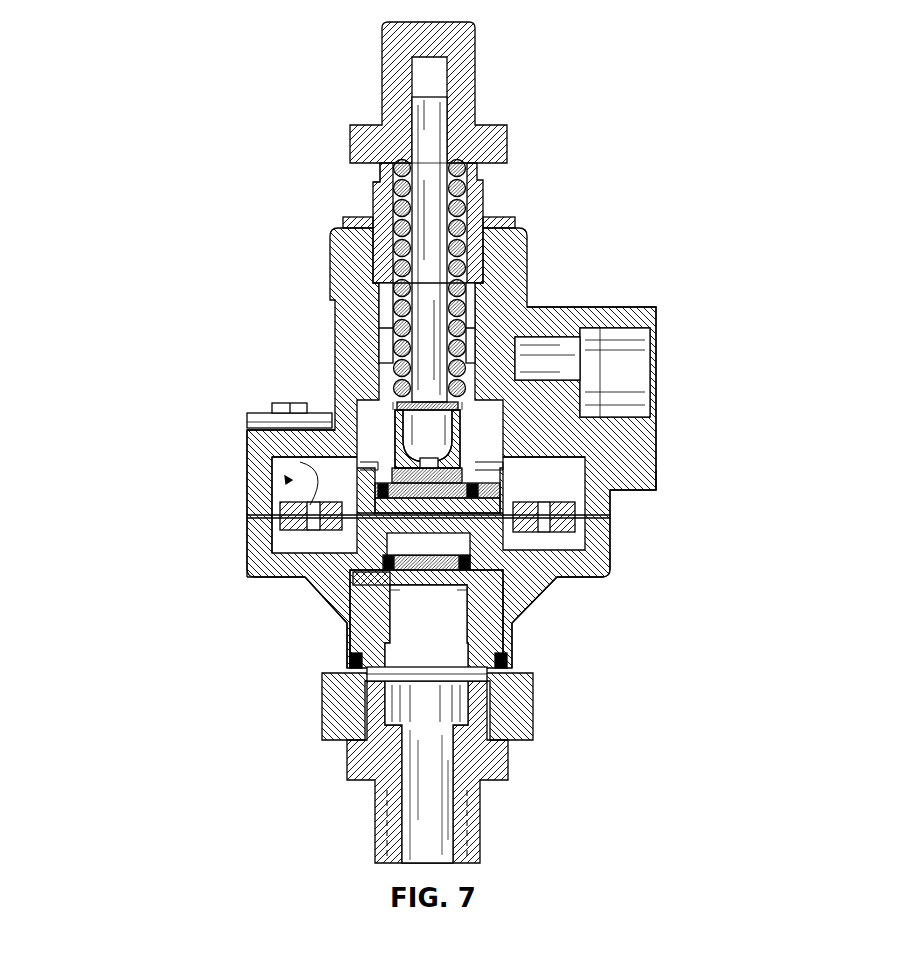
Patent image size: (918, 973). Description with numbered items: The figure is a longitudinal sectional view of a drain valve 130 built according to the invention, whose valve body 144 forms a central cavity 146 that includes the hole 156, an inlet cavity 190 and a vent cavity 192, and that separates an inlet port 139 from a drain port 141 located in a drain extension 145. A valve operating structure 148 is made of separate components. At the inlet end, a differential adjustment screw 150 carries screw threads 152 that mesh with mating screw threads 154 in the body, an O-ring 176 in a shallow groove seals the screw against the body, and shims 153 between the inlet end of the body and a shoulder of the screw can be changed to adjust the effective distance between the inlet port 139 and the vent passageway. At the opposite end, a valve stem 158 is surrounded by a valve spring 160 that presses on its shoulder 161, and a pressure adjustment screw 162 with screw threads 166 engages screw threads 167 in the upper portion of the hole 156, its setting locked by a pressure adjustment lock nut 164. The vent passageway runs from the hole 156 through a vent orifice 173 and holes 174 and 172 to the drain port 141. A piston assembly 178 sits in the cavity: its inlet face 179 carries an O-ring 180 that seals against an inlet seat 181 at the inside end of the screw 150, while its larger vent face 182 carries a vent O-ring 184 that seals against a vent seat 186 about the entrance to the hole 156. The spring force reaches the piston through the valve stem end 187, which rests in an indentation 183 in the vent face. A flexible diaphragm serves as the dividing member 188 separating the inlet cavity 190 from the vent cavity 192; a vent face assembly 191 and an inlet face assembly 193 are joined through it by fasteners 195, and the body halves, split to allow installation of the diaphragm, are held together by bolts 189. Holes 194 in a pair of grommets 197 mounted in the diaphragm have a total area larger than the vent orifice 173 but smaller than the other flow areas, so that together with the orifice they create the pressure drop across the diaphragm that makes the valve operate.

The pressure regulator 130 is at (305, 860).
The inlet port 139 is at (326, 720).
The drain port 141 is at (655, 358).
The valve body 144 is at (332, 288).
The drain extension 145 is at (656, 482).
The central cavity 146 is at (582, 392).
The valve operating structure 148 is at (548, 130).
The differential adjustment screw 150 is at (560, 775).
The screw threads 152 is at (508, 662).
The shims 153 is at (535, 735).
The mating screw threads 154 is at (352, 600).
The hole 156 is at (392, 373).
The valve stem 158 is at (430, 150).
The valve spring 160 is at (398, 160).
The shoulder 161 is at (385, 393).
The pressure adjustment screw 162 is at (478, 52).
The pressure adjustment lock nut 164 is at (517, 220).
The screw threads 166 is at (484, 197).
The screw threads 167 is at (331, 266).
The hole 172 is at (603, 310).
The vent orifice 173 is at (562, 338).
The hole 174 is at (472, 402).
The O-ring 176 is at (332, 668).
The piston assembly 178 is at (352, 583).
The inlet face 179 is at (350, 622).
The O-ring 180 is at (506, 630).
The inlet seat 181 is at (352, 640).
The vent face 182 is at (246, 432).
The indentation 183 is at (612, 476).
The vent O-ring 184 is at (588, 500).
The vent seat 186 is at (272, 460).
The valve stem end 187 is at (456, 448).
The dividing member 188 is at (586, 580).
The bolts 189 is at (245, 416).
The inlet cavity 190 is at (602, 556).
The vent face assembly 191 is at (604, 514).
The vent cavity 192 is at (291, 489).
The inlet face assembly 193 is at (556, 615).
The holes 194 is at (320, 569).
The fasteners 195 is at (356, 605).
The grommets 197 is at (292, 478).